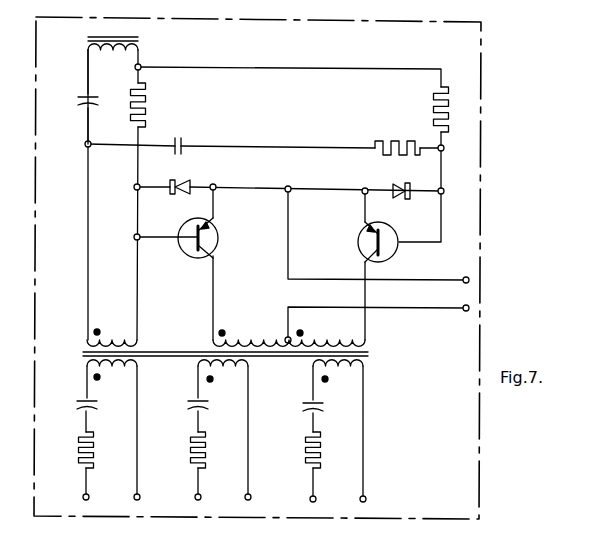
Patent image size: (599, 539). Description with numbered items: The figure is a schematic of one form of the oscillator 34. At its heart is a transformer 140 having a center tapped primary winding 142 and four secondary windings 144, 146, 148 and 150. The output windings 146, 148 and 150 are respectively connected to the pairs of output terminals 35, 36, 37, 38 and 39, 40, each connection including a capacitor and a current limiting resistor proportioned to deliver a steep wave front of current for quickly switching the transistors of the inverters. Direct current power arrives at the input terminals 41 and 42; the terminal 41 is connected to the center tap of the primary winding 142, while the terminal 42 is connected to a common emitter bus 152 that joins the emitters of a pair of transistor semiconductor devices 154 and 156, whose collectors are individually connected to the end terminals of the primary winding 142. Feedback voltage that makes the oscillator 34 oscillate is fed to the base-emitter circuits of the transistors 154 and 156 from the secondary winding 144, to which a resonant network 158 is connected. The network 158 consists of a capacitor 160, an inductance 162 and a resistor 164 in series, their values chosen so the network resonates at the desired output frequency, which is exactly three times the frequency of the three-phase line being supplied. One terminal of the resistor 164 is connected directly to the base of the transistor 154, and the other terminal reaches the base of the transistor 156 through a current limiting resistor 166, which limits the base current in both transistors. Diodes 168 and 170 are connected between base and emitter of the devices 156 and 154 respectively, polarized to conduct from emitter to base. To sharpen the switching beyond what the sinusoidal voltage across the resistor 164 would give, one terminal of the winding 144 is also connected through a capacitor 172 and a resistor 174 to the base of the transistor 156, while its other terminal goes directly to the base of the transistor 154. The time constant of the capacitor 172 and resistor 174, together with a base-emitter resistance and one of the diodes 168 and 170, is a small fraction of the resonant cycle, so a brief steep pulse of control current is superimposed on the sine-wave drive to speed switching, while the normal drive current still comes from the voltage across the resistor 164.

The oscillator 34 is at (482, 165).
The output terminal 35 is at (310, 498).
The output terminal 36 is at (360, 498).
The output terminal 37 is at (83, 496).
The output terminal 38 is at (134, 496).
The output terminal 39 is at (195, 496).
The output terminal 40 is at (245, 496).
The input terminal 41 is at (465, 311).
The input terminal 42 is at (464, 279).
The transformer 140 is at (368, 355).
The primary winding 142 is at (270, 340).
The secondary winding 144 is at (130, 340).
The output winding 146 is at (357, 369).
The output winding 148 is at (128, 369).
The output winding 150 is at (243, 369).
The common emitter bus 152 is at (253, 189).
The transistor 154 is at (220, 240).
The transistor 156 is at (358, 248).
The resonant network 158 is at (120, 130).
The capacitor 160 is at (79, 100).
The inductance 162 is at (140, 50).
The resistor 164 is at (147, 101).
The current limiting resistor 166 is at (432, 111).
The diode 168 is at (403, 184).
The diode 170 is at (178, 182).
The capacitor 172 is at (181, 140).
The resistor 174 is at (401, 141).